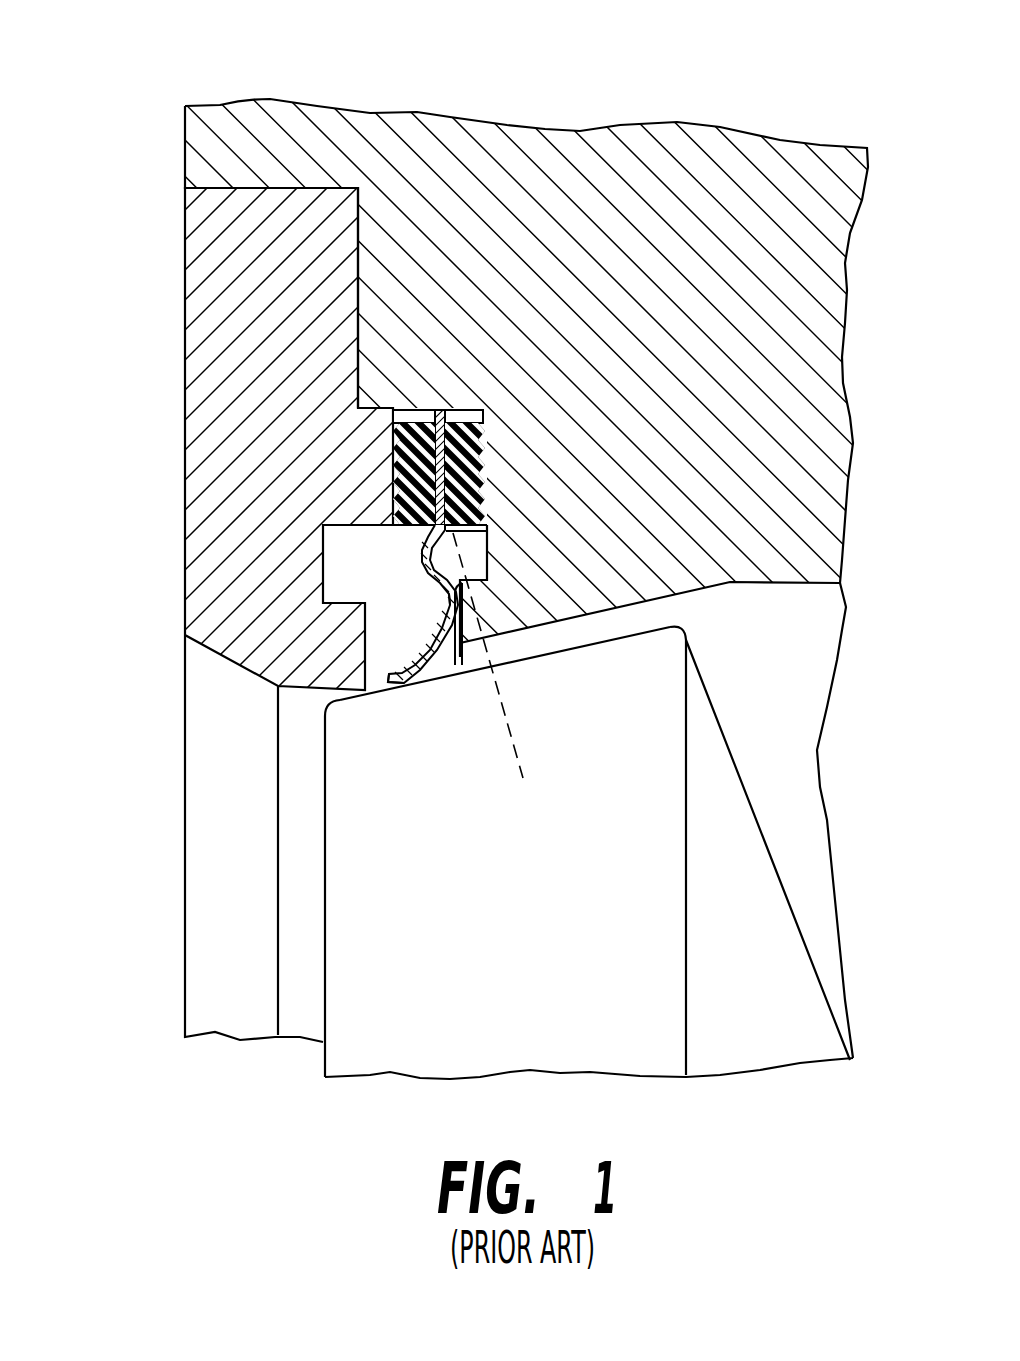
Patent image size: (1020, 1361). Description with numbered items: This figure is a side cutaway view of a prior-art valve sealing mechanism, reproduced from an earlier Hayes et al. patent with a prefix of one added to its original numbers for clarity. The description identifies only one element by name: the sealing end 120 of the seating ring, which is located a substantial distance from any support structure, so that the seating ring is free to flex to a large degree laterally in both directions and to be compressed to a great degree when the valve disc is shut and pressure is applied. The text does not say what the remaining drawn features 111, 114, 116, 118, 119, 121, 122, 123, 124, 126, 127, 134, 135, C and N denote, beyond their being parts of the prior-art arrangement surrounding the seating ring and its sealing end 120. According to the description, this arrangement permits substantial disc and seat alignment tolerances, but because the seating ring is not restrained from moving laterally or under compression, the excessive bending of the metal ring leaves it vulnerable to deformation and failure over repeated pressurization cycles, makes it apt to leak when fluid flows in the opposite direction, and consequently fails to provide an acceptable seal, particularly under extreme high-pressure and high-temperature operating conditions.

The housing 111 is at (540, 155).
The rotating member 114 is at (350, 825).
The sealing surface 116 is at (537, 637).
The seal lip 118 is at (450, 670).
The bolt 119 is at (462, 410).
The sealing end 120 is at (405, 684).
The bolt threads 121 is at (392, 433).
The housing threads 122 is at (495, 458).
The cover member 123 is at (215, 260).
The joint 124 is at (350, 186).
The seal seat 126 is at (488, 580).
The seal flex portion 127 is at (430, 580).
The retainer 134 is at (462, 533).
The seal cavity 135 is at (410, 553).
The contact point C is at (445, 599).
The normal line N is at (518, 753).